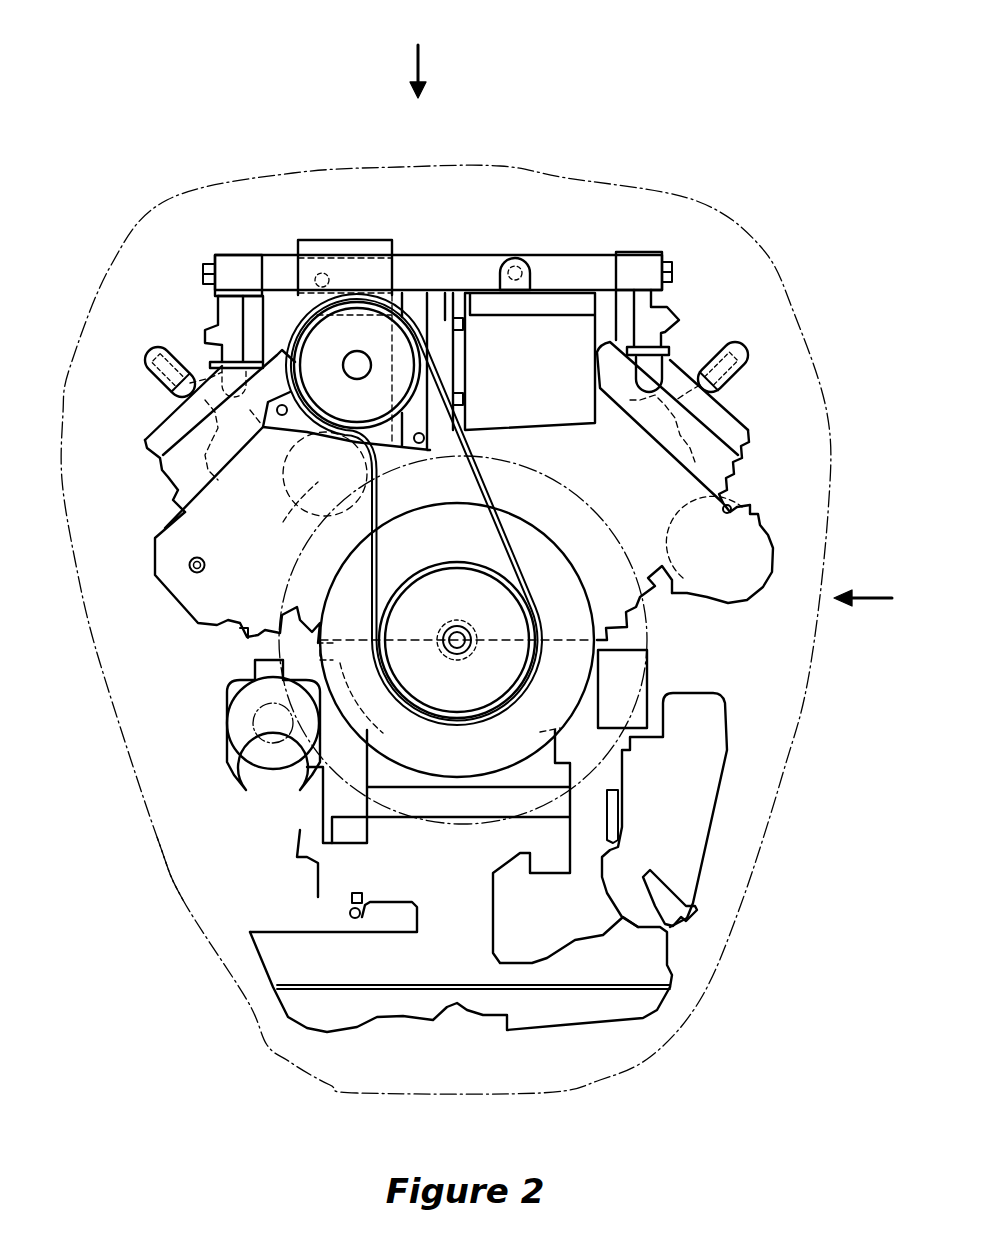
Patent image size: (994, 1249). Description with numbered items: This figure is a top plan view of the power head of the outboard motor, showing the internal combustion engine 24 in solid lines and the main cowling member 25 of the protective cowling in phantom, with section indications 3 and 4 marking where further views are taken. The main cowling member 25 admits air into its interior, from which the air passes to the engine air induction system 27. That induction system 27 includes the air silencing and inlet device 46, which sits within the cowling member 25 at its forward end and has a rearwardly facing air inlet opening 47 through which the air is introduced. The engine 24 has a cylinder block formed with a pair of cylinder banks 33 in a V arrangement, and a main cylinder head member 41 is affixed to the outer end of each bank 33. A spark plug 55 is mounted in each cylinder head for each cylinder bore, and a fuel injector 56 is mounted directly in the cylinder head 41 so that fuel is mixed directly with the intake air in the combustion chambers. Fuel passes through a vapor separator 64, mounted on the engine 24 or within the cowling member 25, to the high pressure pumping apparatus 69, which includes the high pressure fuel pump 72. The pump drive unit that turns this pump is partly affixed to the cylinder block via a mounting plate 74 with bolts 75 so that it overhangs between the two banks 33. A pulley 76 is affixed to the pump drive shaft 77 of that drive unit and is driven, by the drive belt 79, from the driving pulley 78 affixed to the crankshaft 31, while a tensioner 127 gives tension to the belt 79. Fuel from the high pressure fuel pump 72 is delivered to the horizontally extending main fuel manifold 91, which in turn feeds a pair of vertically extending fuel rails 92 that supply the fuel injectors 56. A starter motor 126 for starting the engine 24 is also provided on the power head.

The section line 3- 3 is at (413, 49).
The section line 4- 4 is at (863, 577).
The internal combustion engine 24 is at (447, 424).
The main cowling member 25 is at (293, 172).
The engine air induction system 27 is at (252, 1008).
The crankshaft 31 is at (457, 660).
The cylinder banks 33 is at (651, 594).
The main cylinder head member 41 is at (146, 478).
The air silencing and inlet device 46 is at (405, 1018).
The air inlet opening 47 is at (277, 940).
The spark plug 55 is at (188, 398).
The fuel injector 56 is at (203, 337).
The vapor separator 64 is at (731, 799).
The high pressure pumping apparatus 69 is at (199, 311).
The high pressure fuel pump 72 is at (380, 236).
The mounting plate 74 is at (408, 423).
The bolts 75 is at (268, 443).
The pulley 76 is at (358, 323).
The pump drive shaft 77 is at (347, 367).
The driving pulley 78 is at (453, 583).
The drive belt 79 is at (500, 497).
The main fuel manifold 91 is at (455, 262).
The fuel rails 92 is at (215, 256).
The starter motor 126 is at (238, 710).
The tensioner 127 is at (290, 517).